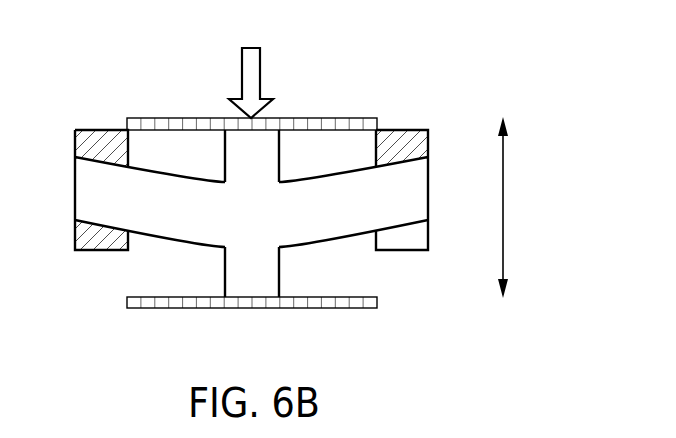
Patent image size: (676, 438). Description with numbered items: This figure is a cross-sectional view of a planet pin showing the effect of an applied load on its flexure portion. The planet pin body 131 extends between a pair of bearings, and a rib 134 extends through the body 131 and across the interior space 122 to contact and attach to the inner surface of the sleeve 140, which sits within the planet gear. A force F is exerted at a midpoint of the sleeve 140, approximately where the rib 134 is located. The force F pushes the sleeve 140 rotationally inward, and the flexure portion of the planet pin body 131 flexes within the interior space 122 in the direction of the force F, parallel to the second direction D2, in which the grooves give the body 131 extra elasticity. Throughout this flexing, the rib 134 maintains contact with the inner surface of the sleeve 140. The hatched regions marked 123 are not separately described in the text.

The sleeve 140 is at (173, 121).
The upper body portion 123 is at (333, 142).
The planet pin body 131 is at (342, 223).
The interior space 122 is at (177, 265).
The rib 134 is at (252, 283).
The force F is at (252, 63).
The second direction D2 is at (503, 208).